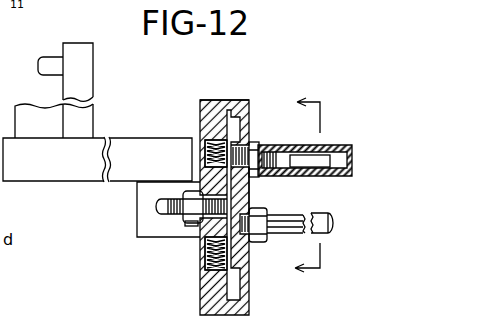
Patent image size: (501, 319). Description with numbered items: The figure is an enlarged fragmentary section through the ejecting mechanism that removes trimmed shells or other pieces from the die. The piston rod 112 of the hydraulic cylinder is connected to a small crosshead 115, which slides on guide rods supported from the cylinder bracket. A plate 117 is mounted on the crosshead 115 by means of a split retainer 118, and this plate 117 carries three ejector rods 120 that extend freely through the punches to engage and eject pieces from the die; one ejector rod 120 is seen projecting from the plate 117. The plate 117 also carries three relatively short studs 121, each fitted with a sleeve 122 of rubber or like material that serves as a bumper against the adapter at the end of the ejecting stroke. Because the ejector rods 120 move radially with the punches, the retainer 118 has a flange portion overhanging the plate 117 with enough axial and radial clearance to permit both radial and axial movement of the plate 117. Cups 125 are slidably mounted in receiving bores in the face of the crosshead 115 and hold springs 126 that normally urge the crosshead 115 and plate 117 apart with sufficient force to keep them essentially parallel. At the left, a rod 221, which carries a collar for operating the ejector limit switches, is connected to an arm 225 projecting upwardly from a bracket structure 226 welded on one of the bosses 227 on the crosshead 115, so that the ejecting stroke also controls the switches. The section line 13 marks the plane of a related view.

The section line 13- 13 is at (320, 187).
The piston rod 112 is at (166, 223).
The crosshead 115 is at (210, 288).
The plate 117 is at (250, 188).
The split retainer 118 is at (239, 102).
The ejector rod 120 is at (323, 231).
The stud 121 is at (273, 158).
The sleeve 122 is at (333, 173).
The cup 125 is at (220, 148).
The spring 126 is at (220, 150).
The rod 221 is at (50, 58).
The arm 225 is at (93, 118).
The bracket structure 226 is at (100, 197).
The boss 227 is at (142, 218).